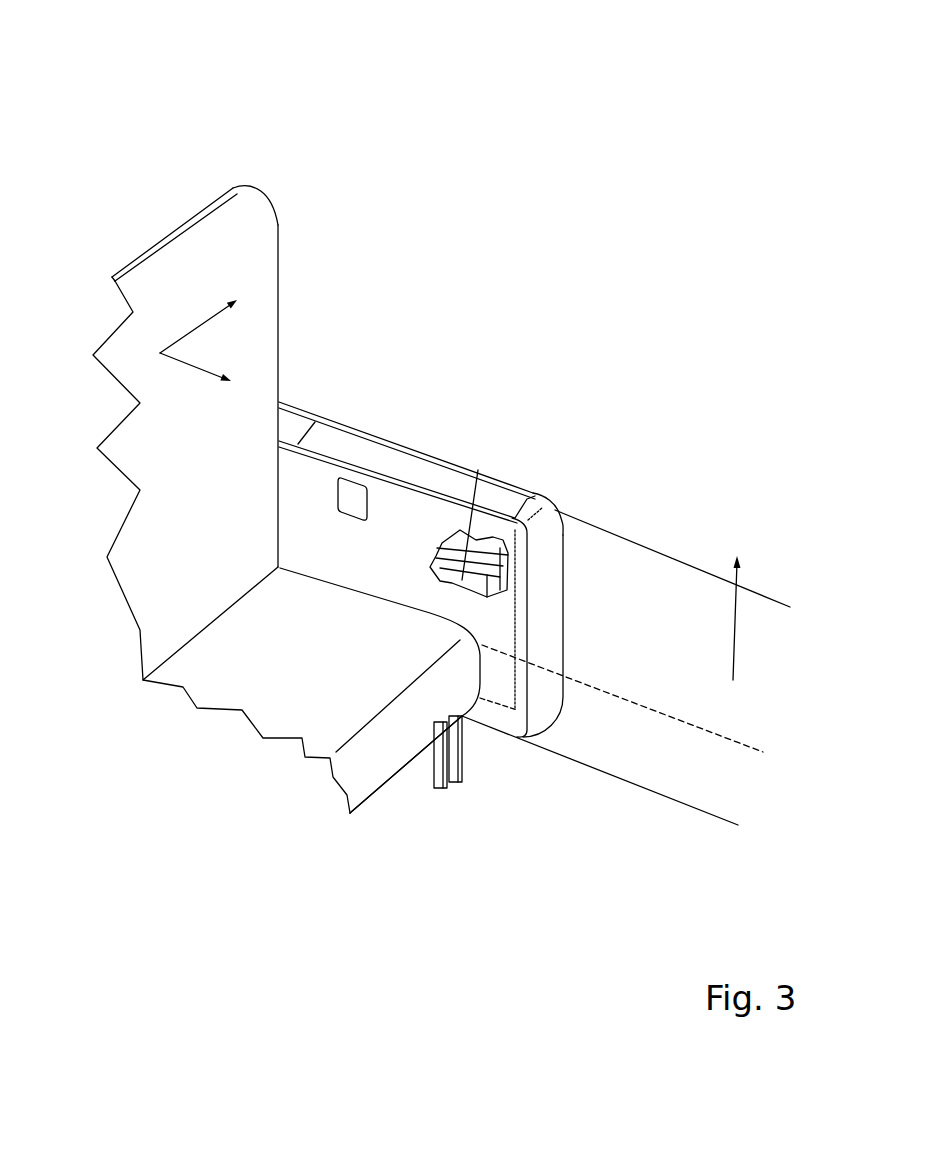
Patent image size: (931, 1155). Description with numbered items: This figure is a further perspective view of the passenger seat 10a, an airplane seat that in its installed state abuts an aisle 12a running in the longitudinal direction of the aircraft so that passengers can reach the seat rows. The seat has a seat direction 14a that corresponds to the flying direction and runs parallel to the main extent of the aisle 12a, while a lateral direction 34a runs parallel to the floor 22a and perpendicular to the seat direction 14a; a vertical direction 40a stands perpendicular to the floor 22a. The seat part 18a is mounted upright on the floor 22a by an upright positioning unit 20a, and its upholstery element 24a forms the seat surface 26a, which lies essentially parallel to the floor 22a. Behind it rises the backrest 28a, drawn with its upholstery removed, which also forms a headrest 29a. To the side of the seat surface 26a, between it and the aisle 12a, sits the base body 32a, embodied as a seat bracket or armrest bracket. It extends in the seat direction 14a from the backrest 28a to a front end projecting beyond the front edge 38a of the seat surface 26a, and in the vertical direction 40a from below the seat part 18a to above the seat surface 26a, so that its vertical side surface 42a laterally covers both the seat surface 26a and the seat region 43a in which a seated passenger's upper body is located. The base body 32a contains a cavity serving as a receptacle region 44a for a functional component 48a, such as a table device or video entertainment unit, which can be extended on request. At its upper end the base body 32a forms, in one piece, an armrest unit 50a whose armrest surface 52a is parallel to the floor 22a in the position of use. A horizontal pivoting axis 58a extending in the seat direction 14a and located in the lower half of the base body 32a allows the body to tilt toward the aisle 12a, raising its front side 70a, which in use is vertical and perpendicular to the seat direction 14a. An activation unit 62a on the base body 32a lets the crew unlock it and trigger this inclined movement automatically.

The passenger seat 10a is at (232, 132).
The aisle 12a is at (643, 560).
The seat direction 14a is at (188, 362).
The seat part 18a is at (378, 768).
The upright positioning unit 20a is at (440, 740).
The floor 22a is at (638, 462).
The upholstery element 24a is at (348, 790).
The seat surface 26a is at (309, 648).
The backrest 28a is at (178, 250).
The headrest 29a is at (252, 216).
The base body 32a is at (542, 702).
The lateral direction 34a is at (213, 303).
The front edge 38a is at (448, 790).
The vertical direction 40a is at (740, 552).
The side surface 42a is at (374, 568).
The seat region 43a is at (418, 572).
The receptacle region 44a is at (545, 505).
The functional component 48a is at (510, 525).
The armrest unit 50a is at (416, 436).
The armrest surface 52a is at (390, 445).
The pivoting axis 58a is at (660, 710).
The activation unit 62a is at (344, 475).
The front side 70a is at (552, 647).